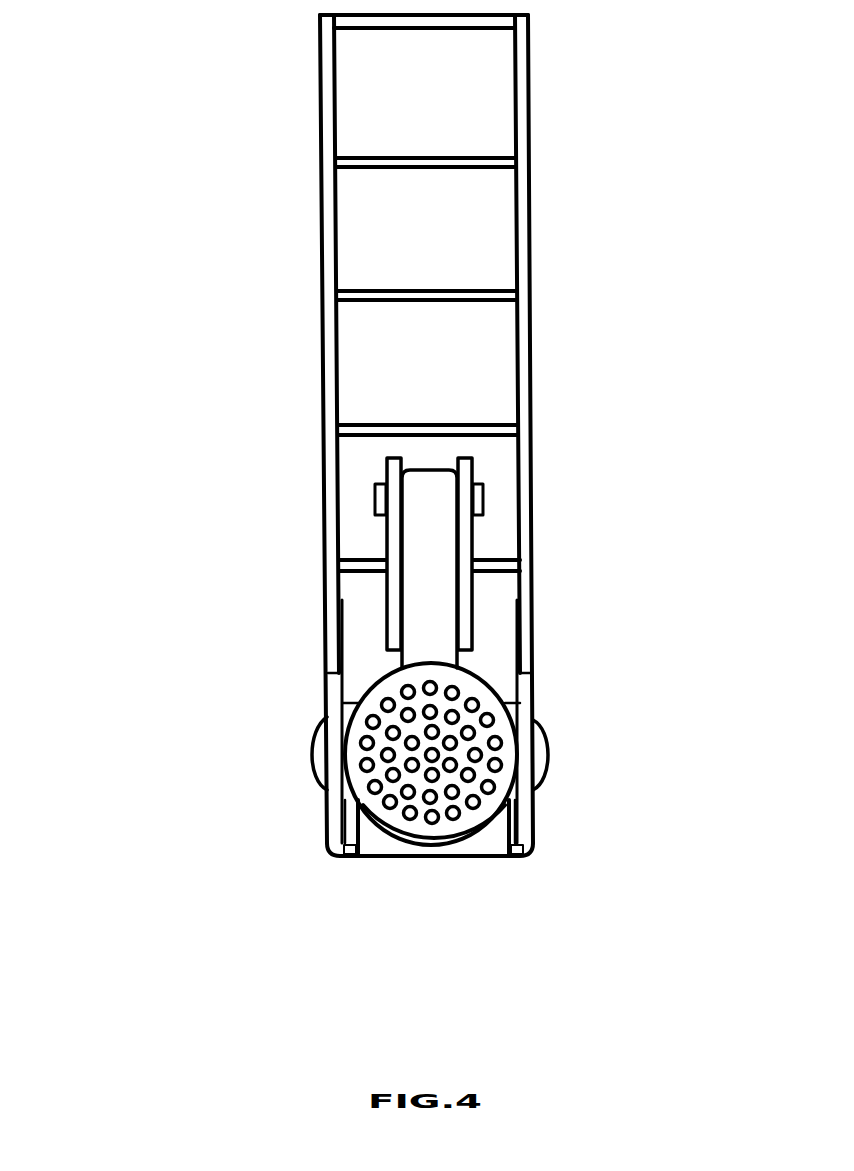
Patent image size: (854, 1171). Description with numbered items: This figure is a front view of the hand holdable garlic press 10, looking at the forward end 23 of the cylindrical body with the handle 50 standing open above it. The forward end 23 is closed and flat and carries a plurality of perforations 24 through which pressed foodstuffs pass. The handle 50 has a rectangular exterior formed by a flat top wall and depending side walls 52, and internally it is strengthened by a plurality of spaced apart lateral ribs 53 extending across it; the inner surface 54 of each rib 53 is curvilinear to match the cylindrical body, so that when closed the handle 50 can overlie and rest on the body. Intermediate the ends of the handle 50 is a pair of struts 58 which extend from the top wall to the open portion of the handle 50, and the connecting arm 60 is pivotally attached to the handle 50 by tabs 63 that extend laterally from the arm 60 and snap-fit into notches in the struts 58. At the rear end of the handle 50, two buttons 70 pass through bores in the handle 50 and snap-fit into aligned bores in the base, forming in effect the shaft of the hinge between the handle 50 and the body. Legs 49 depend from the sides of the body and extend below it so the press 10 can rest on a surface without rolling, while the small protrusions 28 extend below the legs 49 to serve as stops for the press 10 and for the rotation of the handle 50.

The garlic press 10 is at (193, 652).
The forward end 23 is at (370, 805).
The perforations 24 is at (488, 790).
The protrusions 28 is at (347, 857).
The legs 49 is at (352, 825).
The handle 50 is at (470, 68).
The side walls 52 is at (327, 232).
The lateral ribs 53 is at (468, 290).
The inner surface 54 is at (378, 92).
The struts 58 is at (467, 603).
The connecting arm 60 is at (430, 537).
The tabs 63 is at (375, 505).
The buttons 70 is at (545, 752).